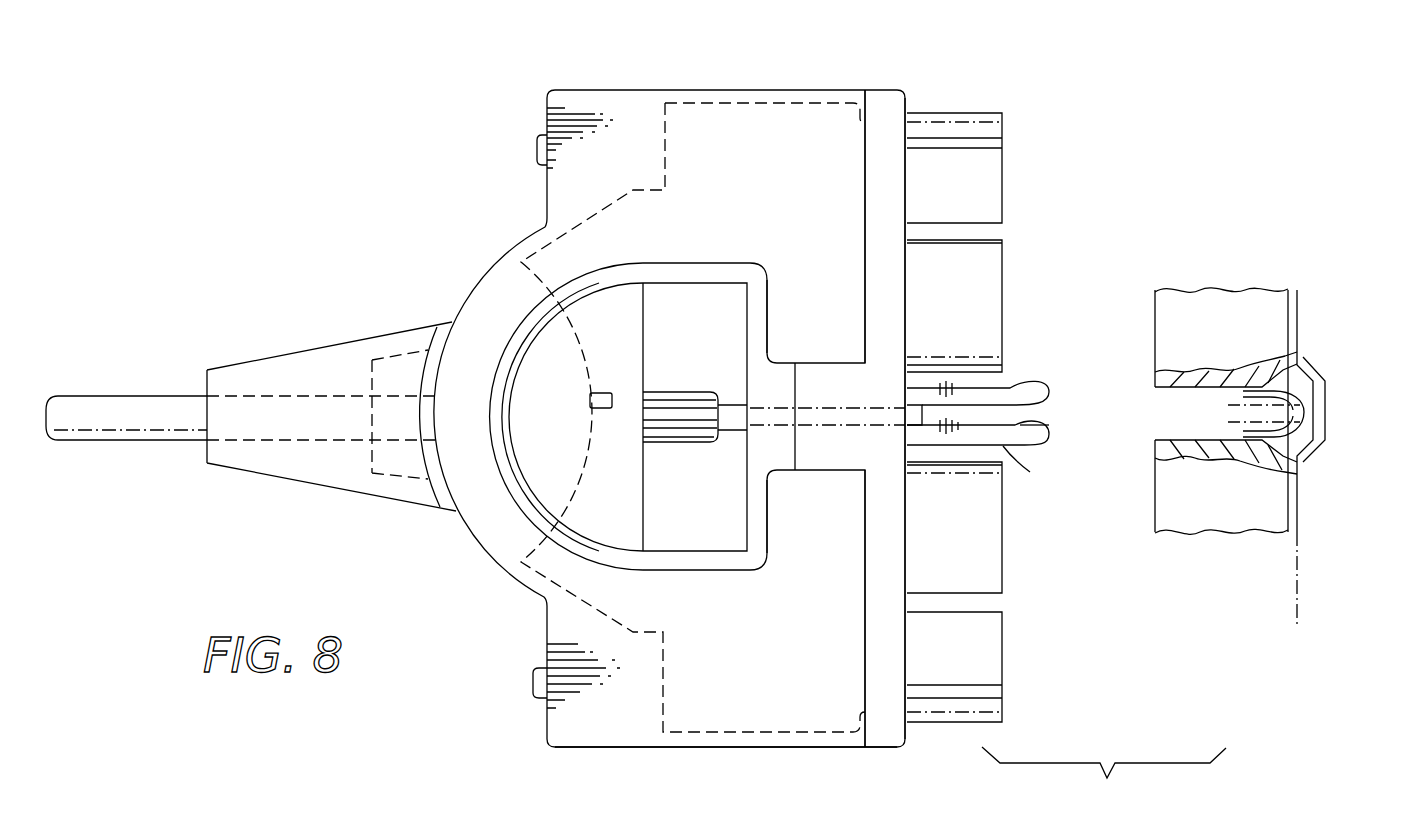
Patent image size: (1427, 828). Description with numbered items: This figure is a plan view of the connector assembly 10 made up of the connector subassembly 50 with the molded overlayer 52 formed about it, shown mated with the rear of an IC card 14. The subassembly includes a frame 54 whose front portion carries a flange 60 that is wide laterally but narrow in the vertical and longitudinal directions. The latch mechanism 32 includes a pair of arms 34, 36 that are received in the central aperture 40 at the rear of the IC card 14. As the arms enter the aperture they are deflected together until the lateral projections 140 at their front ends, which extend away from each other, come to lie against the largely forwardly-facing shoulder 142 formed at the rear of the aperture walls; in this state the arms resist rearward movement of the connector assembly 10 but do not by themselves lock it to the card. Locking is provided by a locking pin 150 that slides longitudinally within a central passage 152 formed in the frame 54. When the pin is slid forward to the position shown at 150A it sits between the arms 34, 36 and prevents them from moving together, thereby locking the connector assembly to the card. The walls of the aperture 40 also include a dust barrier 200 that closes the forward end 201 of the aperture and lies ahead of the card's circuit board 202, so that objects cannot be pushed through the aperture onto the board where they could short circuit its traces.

The connector assembly 10 is at (468, 226).
The IC card 14 is at (1223, 288).
The latch mechanism 32 is at (498, 502).
The arm 34 is at (1030, 386).
The arm 36 is at (1012, 450).
The central aperture 40 is at (1155, 400).
The connector subassembly 50 is at (660, 144).
The molded overlayer 52 is at (545, 106).
The frame 54 is at (863, 754).
The flange 60 is at (905, 750).
The lateral projection 140 is at (1030, 458).
The shoulder 142 is at (1248, 432).
The locking pin 150 is at (930, 412).
The forward position of locking pin 150A is at (1081, 437).
The central passage 152 is at (842, 416).
The dust barrier 200 is at (1318, 420).
The forward end of aperture 201 is at (1288, 388).
The circuit board 202 is at (1292, 560).